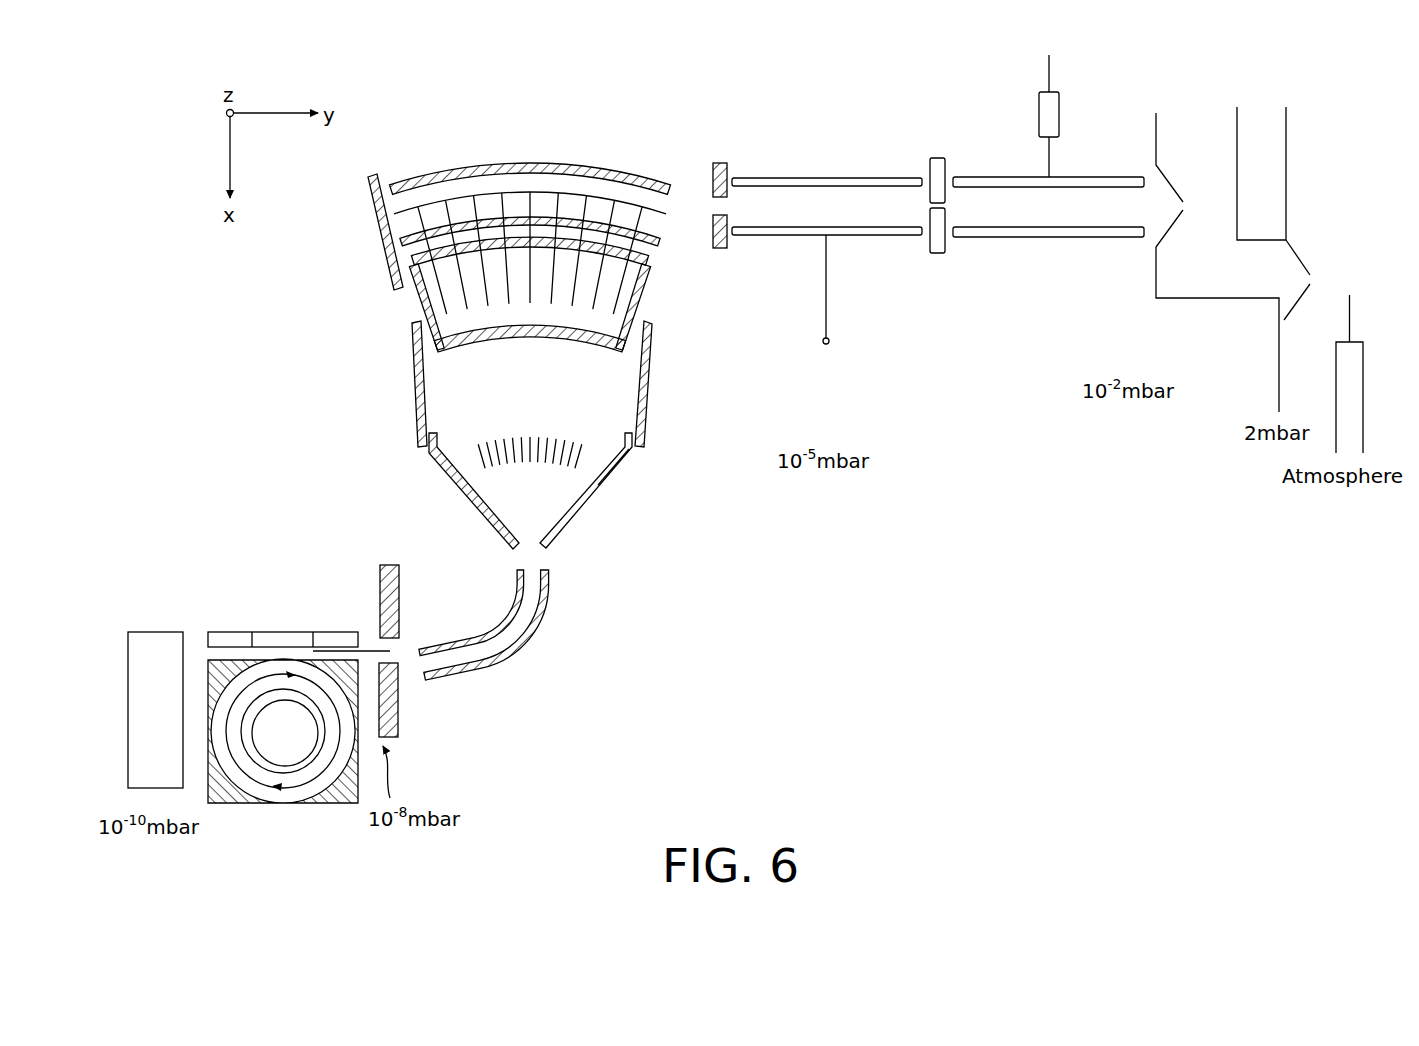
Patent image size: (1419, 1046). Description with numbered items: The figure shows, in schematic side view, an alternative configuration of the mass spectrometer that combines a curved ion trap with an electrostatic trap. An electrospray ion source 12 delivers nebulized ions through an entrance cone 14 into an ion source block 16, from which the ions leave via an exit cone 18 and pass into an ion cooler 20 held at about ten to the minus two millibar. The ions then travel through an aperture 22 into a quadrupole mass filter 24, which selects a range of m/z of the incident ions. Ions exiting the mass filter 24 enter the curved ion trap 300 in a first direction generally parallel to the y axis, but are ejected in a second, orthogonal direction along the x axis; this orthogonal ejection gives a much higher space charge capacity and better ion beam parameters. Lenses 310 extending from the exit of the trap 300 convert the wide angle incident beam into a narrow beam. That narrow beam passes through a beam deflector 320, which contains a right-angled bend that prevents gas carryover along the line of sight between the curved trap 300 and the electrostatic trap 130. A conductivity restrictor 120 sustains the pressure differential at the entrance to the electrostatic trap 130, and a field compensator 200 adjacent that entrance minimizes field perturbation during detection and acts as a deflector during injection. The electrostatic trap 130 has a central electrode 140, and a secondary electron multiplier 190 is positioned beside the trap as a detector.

The electrospray ion source 12 is at (1356, 411).
The entrance cone 14 is at (1300, 251).
The ion source block 16 is at (1257, 90).
The exit cone 18 is at (1158, 150).
The ion cooler 20 is at (1106, 177).
The aperture 22 is at (938, 157).
The quadrupole mass filter 24 is at (881, 177).
The conductivity restrictor 120 is at (391, 565).
The electrostatic trap 130 is at (259, 695).
The central electrode 140 is at (292, 743).
The secondary electron multiplier 190 is at (156, 645).
The field compensator 200 is at (288, 631).
The curved ion trap 300 is at (502, 140).
The lenses 310 is at (597, 491).
The beam deflector 320 is at (503, 661).